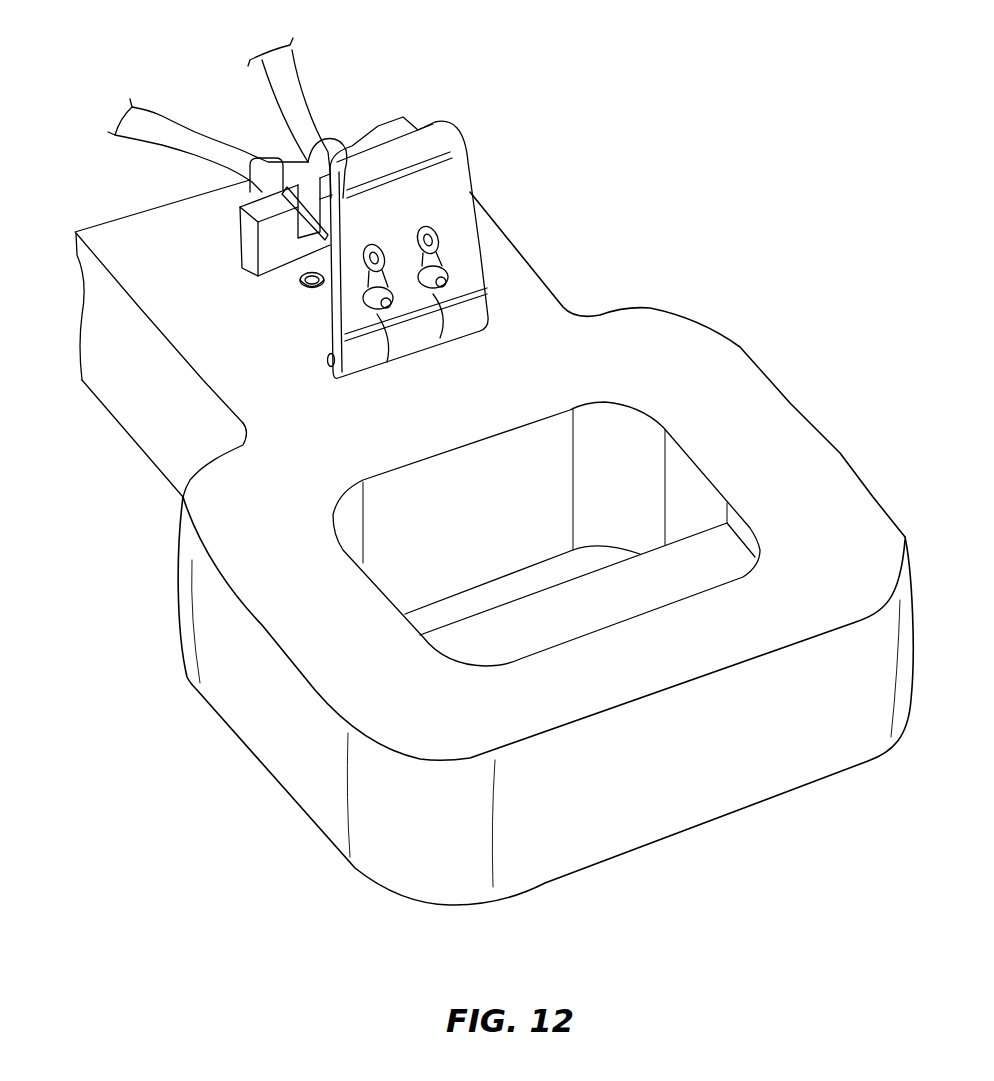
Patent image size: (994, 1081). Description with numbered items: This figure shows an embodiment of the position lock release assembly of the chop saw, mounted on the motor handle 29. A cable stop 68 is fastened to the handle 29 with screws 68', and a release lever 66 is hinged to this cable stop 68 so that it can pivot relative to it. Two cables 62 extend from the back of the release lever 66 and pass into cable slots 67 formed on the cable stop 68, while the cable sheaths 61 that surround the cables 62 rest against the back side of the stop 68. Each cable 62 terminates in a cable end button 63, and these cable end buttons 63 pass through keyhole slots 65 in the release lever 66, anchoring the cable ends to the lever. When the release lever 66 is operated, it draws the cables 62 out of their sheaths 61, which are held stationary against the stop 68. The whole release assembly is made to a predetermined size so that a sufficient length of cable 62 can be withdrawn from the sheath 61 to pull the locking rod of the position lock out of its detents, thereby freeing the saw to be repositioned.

The handle 29 is at (740, 767).
The cable sheaths 61 is at (282, 75).
The cables 62 is at (297, 280).
The cable end buttons 63 is at (448, 272).
The keyhole slots 65 is at (445, 242).
The release lever 66 is at (443, 182).
The cable slots 67 is at (308, 198).
The cable stop 68 is at (206, 225).
The screws 68' is at (193, 365).